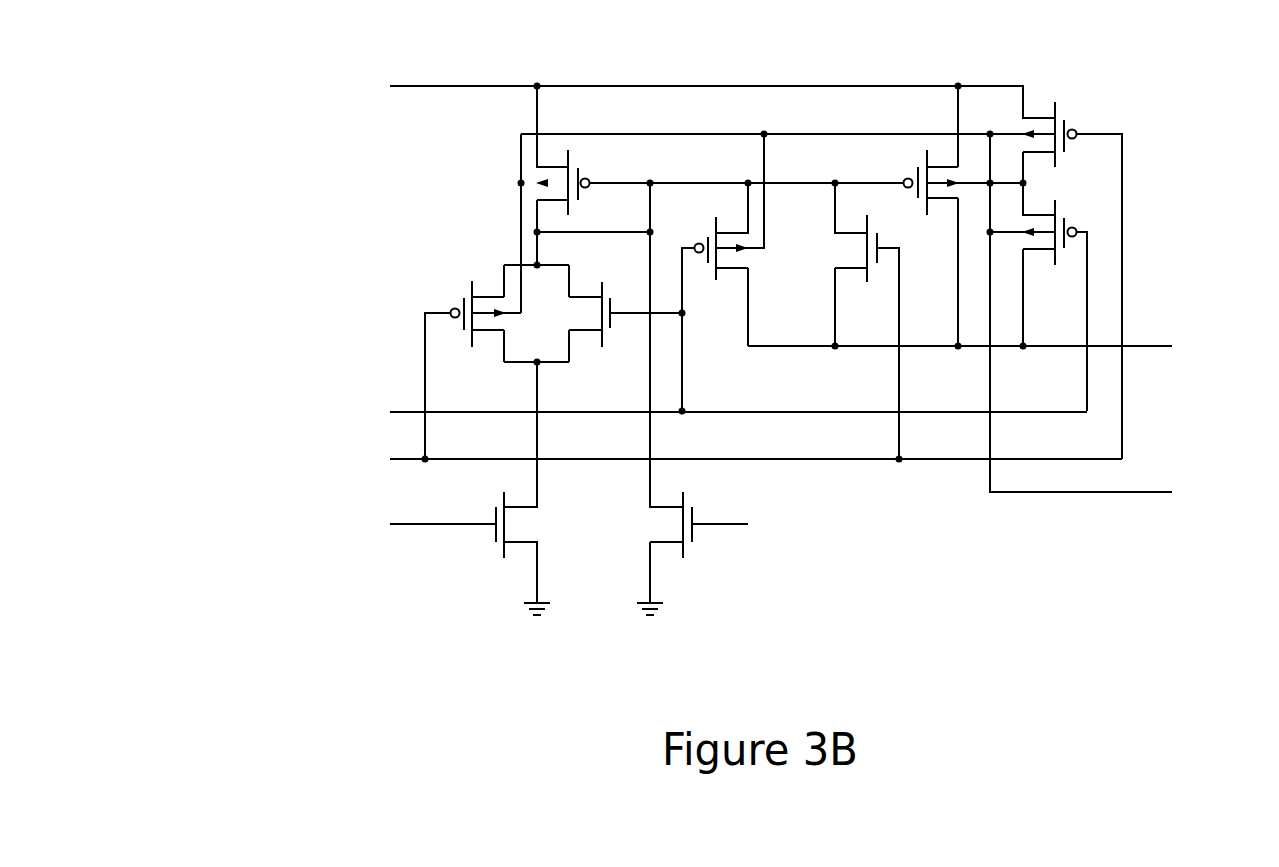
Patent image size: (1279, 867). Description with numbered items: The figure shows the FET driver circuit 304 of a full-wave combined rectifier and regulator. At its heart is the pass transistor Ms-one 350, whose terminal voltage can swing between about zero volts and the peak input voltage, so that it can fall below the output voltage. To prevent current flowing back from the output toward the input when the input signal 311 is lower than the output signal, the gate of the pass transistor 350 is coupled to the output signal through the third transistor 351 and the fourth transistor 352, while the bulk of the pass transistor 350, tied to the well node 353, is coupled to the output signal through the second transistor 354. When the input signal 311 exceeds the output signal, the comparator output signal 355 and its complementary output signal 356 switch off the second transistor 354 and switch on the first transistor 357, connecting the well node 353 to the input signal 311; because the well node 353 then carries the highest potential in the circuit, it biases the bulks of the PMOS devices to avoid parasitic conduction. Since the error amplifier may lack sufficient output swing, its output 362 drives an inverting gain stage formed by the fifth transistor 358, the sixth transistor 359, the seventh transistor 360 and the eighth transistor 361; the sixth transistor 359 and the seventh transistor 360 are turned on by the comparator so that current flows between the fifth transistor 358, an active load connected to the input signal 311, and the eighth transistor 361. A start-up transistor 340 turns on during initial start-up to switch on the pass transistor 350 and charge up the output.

The FET driver circuit 304 is at (648, 325).
The input signal Vac1 311 is at (370, 88).
The FET M1 357 is at (1078, 88).
The FET M5 358 is at (497, 196).
The FET M7 360 is at (458, 356).
The FET M6 359 is at (625, 340).
The FET M4 352 is at (772, 280).
The FET M3 351 is at (808, 252).
The FET Ms1 350 is at (940, 240).
The FET M2 354 is at (1046, 295).
The node Nw 353 is at (1188, 505).
The output signal Coutb 356 is at (330, 415).
The output signal Cout 355 is at (337, 457).
The output Aeo of the error amplifier Ae 362 is at (366, 536).
The FET M8 361 is at (558, 536).
The start-up FET M9 340 is at (631, 536).